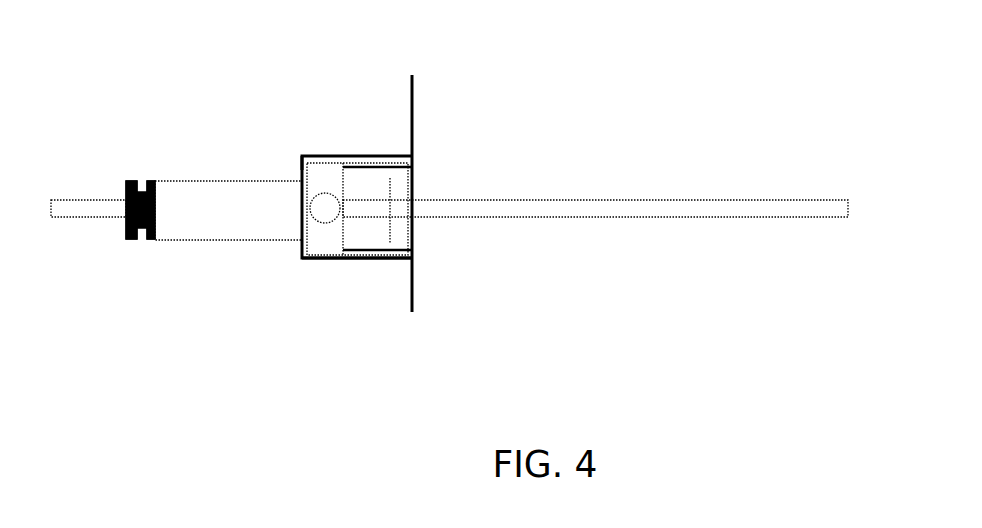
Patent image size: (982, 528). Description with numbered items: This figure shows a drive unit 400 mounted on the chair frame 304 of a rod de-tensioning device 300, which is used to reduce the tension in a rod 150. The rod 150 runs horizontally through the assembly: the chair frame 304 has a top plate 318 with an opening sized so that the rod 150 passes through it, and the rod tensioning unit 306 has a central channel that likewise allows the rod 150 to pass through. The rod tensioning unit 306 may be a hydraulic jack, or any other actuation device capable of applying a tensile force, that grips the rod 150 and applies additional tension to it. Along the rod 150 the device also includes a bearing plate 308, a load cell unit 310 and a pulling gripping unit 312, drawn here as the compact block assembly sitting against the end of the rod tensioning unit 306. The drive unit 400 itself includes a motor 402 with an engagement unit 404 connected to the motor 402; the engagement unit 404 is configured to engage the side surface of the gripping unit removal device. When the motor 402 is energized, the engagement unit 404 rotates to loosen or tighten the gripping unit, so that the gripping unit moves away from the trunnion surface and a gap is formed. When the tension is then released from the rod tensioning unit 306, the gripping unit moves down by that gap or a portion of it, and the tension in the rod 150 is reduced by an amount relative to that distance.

The rod 150 is at (62, 218).
The rod de-tensioning device 300 is at (188, 304).
The chair frame 304 is at (325, 263).
The rod tensioning unit 306 is at (253, 243).
The bearing plate 308 is at (157, 243).
The load cell unit 310 is at (143, 186).
The pulling gripping unit 312 is at (122, 230).
The top plate 318 is at (297, 161).
The drive unit 400 is at (328, 156).
The motor 402 is at (308, 197).
The engagement unit 404 is at (364, 196).